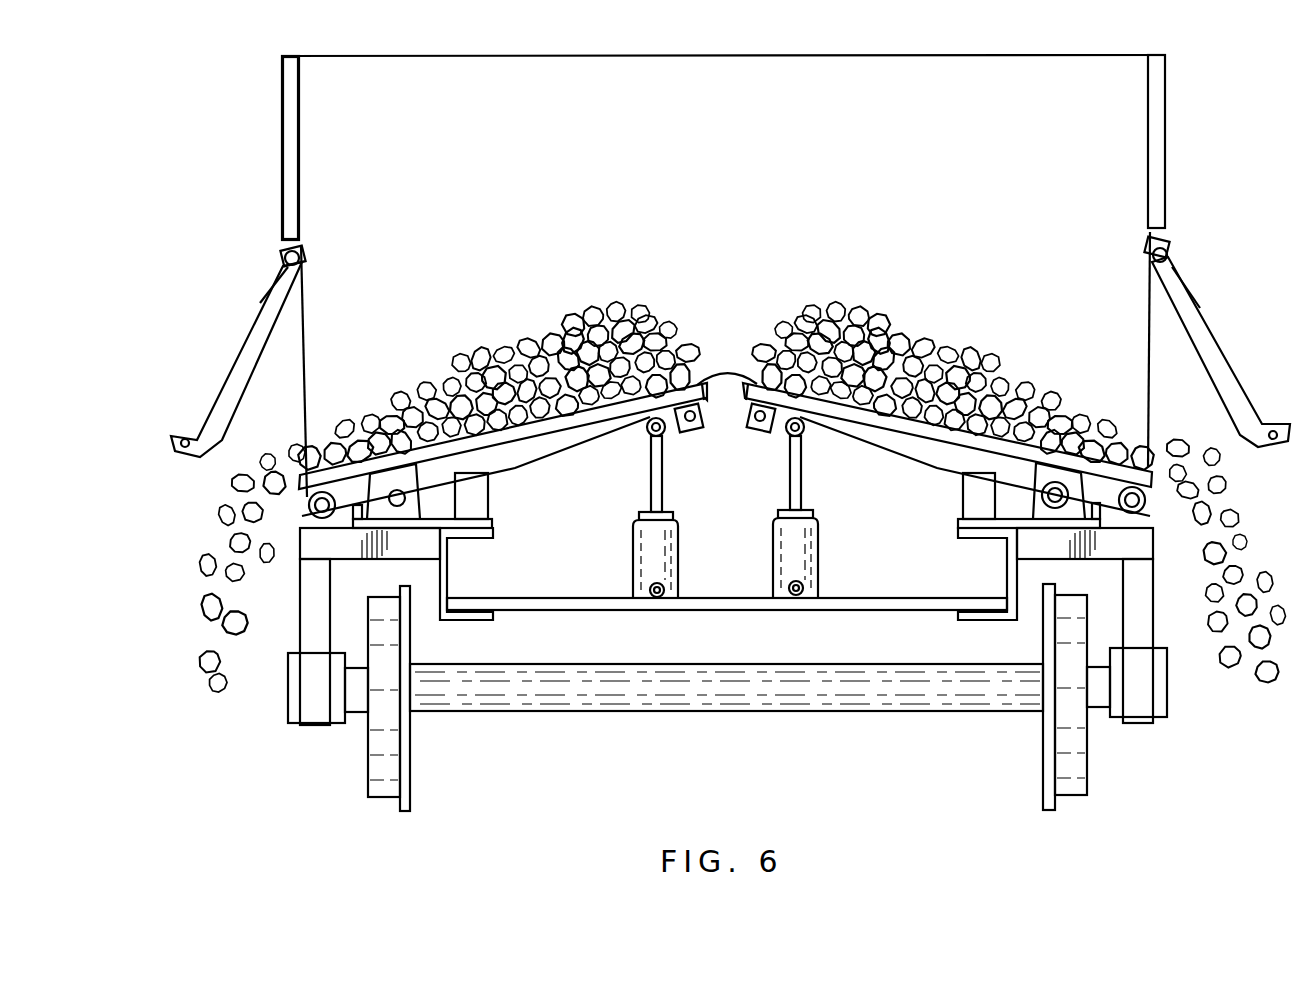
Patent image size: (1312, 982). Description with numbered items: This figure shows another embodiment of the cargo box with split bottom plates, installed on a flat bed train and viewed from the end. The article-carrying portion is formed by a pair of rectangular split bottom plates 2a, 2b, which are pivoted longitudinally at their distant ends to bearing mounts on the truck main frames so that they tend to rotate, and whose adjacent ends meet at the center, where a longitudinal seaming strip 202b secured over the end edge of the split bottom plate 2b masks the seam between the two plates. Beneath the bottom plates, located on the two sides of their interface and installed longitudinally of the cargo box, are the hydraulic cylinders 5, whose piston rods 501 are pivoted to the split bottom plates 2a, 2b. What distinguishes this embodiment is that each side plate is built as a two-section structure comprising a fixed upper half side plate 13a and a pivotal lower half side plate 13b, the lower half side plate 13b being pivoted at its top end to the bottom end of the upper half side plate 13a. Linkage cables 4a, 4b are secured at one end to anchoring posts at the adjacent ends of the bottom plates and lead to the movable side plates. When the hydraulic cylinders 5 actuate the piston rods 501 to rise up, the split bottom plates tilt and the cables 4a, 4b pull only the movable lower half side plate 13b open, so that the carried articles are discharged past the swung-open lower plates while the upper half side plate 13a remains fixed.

The fixed upper half side plate 13a is at (299, 147).
The pivotal lower half side plate 13b is at (252, 383).
The longitudinal seaming strip 202b is at (727, 376).
The split bottom plate 2a is at (700, 432).
The split bottom plate 2b is at (745, 432).
The linkage cable 4a is at (541, 461).
The linkage cable 4b is at (912, 463).
The piston rod 501 is at (663, 474).
The hydraulic cylinder 5 is at (633, 545).